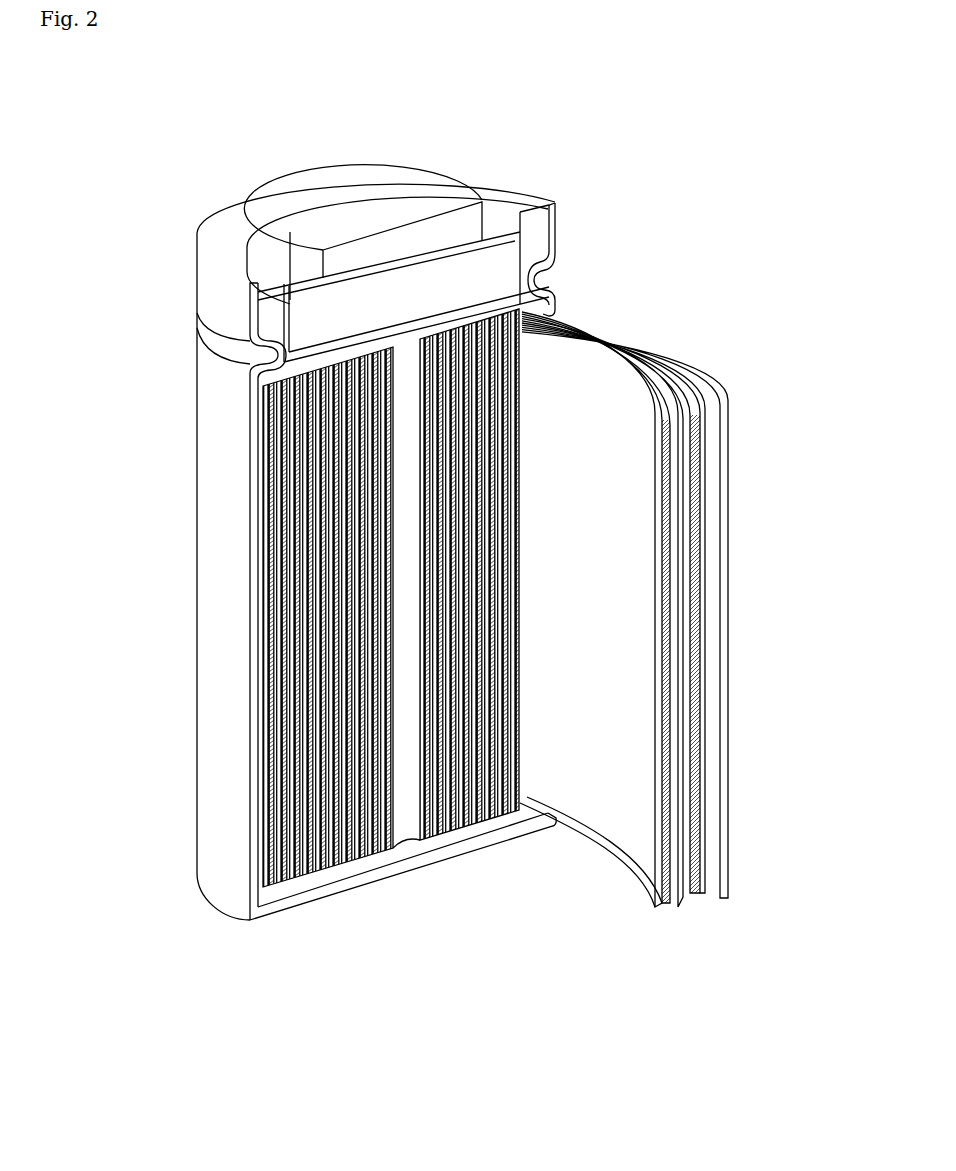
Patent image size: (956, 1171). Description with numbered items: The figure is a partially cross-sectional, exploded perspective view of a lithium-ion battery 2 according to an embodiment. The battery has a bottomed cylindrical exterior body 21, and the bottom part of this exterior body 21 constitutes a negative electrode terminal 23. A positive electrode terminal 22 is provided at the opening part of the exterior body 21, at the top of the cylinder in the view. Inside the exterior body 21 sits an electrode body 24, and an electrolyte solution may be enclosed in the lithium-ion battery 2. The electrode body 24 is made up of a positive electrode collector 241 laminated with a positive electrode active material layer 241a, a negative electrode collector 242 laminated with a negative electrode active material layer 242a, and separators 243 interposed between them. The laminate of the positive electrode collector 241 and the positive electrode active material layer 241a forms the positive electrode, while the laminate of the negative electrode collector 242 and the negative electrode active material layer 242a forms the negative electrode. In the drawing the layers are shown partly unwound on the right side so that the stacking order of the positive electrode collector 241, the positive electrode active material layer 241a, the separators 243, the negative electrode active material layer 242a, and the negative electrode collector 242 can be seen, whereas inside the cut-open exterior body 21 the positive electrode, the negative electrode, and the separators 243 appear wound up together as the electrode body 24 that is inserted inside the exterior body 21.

The lithium-ion battery 2 is at (604, 112).
The exterior body 21 is at (212, 632).
The positive electrode terminal 22 is at (370, 200).
The negative electrode terminal 23 is at (403, 882).
The electrode body 24 is at (650, 912).
The positive electrode collector 241 is at (638, 875).
The positive electrode active material layer 241a is at (667, 566).
The negative electrode collector 242 is at (700, 395).
The negative electrode active material layer 242a is at (696, 626).
The separators 243 is at (637, 372).